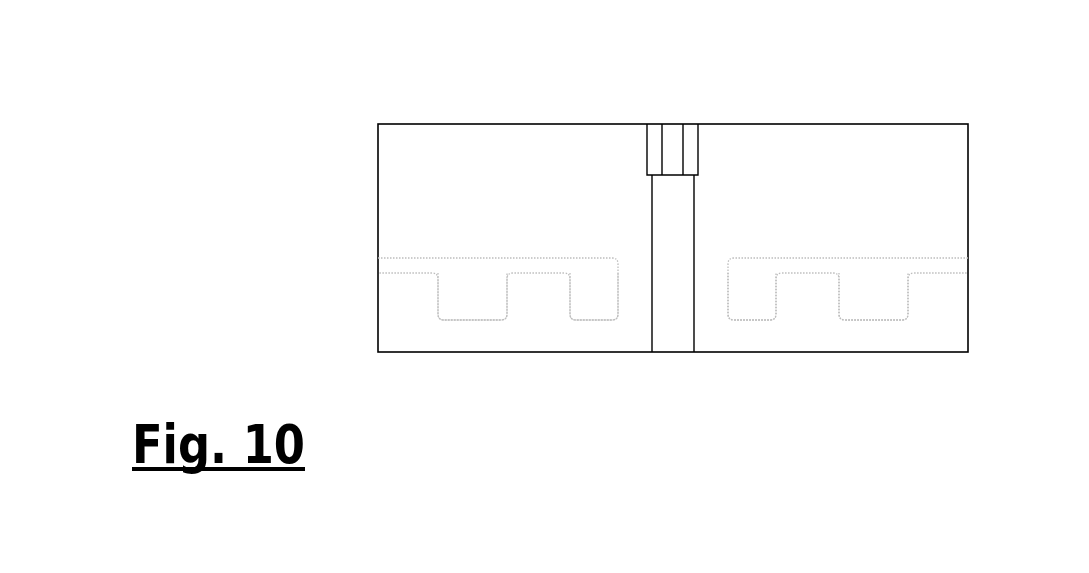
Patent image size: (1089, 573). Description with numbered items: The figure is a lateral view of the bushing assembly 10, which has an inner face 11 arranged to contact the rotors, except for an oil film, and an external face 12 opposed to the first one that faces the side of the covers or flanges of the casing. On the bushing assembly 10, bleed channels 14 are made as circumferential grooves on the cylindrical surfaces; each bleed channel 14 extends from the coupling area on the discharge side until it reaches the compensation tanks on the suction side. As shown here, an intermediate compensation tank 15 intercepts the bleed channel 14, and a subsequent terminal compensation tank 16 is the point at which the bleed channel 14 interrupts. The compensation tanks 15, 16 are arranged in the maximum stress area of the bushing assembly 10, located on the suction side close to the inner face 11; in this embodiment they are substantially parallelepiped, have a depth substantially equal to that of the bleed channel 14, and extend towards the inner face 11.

The bushing assembly 10 is at (326, 165).
The inner face 11 is at (648, 360).
The external face 12 is at (648, 116).
The bleed channel 14 is at (410, 267).
The intermediate compensation tank 15 is at (482, 300).
The terminal compensation tank 16 is at (597, 302).